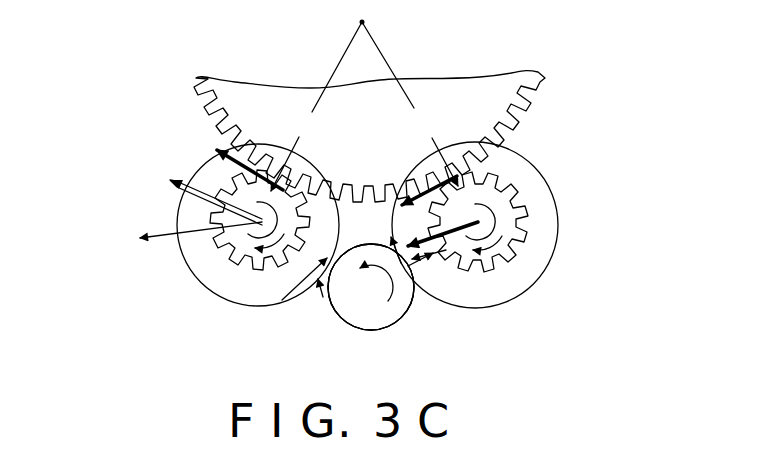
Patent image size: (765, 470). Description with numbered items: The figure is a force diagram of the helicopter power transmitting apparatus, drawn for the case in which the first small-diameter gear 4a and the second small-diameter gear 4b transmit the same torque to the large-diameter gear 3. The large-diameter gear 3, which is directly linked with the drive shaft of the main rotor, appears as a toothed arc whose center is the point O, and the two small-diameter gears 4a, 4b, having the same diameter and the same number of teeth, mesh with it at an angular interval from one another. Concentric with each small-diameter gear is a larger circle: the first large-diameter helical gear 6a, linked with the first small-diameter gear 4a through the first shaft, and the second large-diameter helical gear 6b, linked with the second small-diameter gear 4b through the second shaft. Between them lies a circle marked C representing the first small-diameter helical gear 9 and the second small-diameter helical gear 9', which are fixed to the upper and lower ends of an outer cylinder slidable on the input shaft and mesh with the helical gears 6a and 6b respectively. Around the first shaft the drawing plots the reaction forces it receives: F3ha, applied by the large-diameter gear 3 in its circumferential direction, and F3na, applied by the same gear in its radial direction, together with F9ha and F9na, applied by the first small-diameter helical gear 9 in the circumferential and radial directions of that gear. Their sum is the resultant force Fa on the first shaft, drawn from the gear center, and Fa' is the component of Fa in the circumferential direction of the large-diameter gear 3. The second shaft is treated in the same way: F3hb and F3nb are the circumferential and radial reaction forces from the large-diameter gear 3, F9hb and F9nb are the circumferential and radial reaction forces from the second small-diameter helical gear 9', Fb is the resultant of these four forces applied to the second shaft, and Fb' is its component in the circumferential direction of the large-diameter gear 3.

The center of rotation of gear 3 O is at (363, 56).
The large-diameter gear 3 is at (497, 100).
The first small-diameter gear 4a is at (229, 262).
The second small-diameter gear 4b is at (528, 200).
The first large-diameter helical gear 6a is at (200, 281).
The second large-diameter helical gear 6b is at (533, 240).
The first small-diameter helical gear 9 is at (396, 294).
The second small-diameter helical gear 9' is at (395, 287).
The roller center C is at (371, 287).
The resultant force on first shaft Fa is at (197, 257).
The circumferential component of Fa Fa' is at (213, 173).
The circumferential reaction force from large-diameter gear on first shaft F3ha is at (250, 138).
The radial reaction force from large-diameter gear on first shaft F3na is at (314, 154).
The circumferential reaction force from large-diameter gear on second shaft F3hb is at (440, 152).
The radial reaction force from large-diameter gear on second shaft F3nb is at (506, 150).
The circumferential reaction force from second small-diameter helical gear on second F9hb is at (392, 235).
The resultant force on second shaft Fb is at (495, 257).
The circumferential component of Fb Fb' is at (495, 287).
The radial reaction force from second small-diameter helical gear on second shaft F9nb is at (410, 262).
The circumferential reaction force from first small-diameter helical gear on first s F9ha is at (321, 297).
The radial reaction force from first small-diameter helical gear on first shaft F9na is at (282, 300).